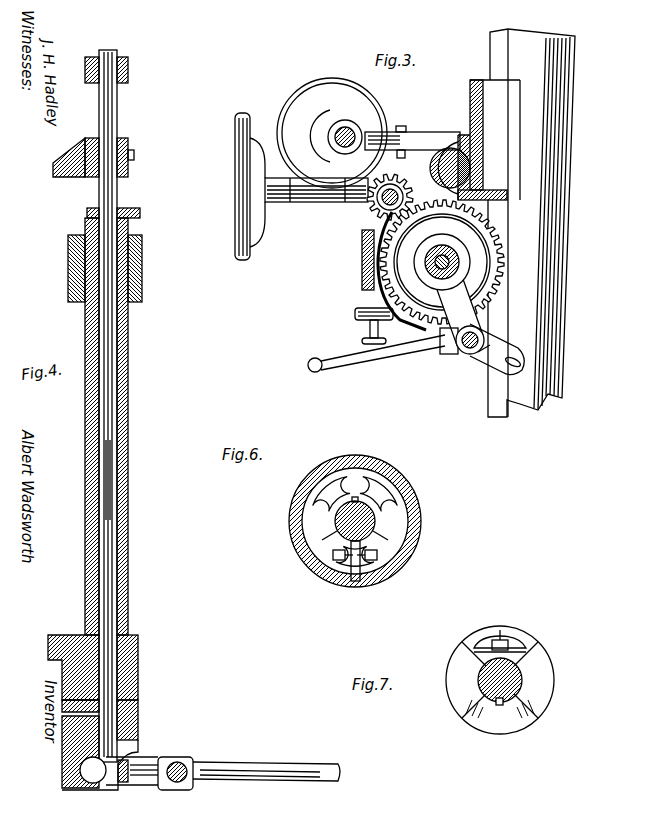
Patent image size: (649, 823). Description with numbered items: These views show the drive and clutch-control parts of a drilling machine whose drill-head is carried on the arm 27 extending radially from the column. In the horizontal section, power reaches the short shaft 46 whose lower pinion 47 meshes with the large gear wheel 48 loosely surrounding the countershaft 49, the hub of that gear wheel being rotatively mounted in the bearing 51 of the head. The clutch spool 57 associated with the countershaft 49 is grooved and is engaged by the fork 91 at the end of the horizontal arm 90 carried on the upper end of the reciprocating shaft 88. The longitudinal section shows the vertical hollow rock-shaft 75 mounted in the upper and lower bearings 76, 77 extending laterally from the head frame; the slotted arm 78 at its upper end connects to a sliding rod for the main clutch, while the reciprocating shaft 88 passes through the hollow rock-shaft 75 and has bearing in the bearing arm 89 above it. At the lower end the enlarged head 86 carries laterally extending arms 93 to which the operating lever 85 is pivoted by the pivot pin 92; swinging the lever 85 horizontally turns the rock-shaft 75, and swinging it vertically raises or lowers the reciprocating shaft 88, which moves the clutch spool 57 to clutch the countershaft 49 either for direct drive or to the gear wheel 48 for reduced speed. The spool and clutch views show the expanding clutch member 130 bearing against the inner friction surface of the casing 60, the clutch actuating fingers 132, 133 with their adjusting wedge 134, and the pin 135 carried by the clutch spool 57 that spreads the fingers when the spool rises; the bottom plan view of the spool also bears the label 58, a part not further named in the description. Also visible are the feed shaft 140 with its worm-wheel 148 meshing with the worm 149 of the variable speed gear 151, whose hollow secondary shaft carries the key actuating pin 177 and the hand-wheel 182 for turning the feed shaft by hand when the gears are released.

In FIG. 3, the arm 27 is at (570, 65).
In FIG. 3, the short shaft 46 is at (378, 201).
In FIG. 3, the pinion 47 is at (385, 206).
In FIG. 3, the gear wheel 48 is at (398, 272).
In FIG. 3, the countershaft 49 is at (455, 256).
In FIG. 6, the countershaft 49 is at (376, 519).
In FIG. 7, the countershaft 49 is at (503, 702).
In FIG. 3, the bearing 51 is at (444, 250).
In FIG. 7, the clutch spool 57 is at (483, 636).
In FIG. 7, the collar 58 is at (536, 666).
In FIG. 6, the casing 60 is at (410, 497).
In FIG. 4, the hollow rock-shaft 75 is at (120, 397).
In FIG. 4, the bearing 76 is at (142, 290).
In FIG. 3, the bearing 76 is at (478, 355).
In FIG. 4, the bearing 77 is at (140, 645).
In FIG. 4, the arm 78 is at (140, 213).
In FIG. 3, the arm 78 is at (500, 366).
In FIG. 4, the operating lever 85 is at (245, 768).
In FIG. 3, the operating lever 85 is at (360, 368).
In FIG. 4, the head 86 is at (140, 712).
In FIG. 4, the reciprocating shaft 88 is at (108, 443).
In FIG. 3, the reciprocating shaft 88 is at (465, 352).
In FIG. 4, the bearing arm 89 is at (128, 70).
In FIG. 4, the arm 90 is at (82, 166).
In FIG. 3, the arm 90 is at (456, 300).
In FIG. 3, the fork 91 is at (466, 270).
In FIG. 4, the pivot pin 92 is at (183, 763).
In FIG. 4, the arms 93 is at (150, 752).
In FIG. 3, the arms 93 is at (440, 344).
In FIG. 6, the expanding clutch member 130 is at (358, 480).
In FIG. 6, the clutch actuating finger 132 is at (340, 562).
In FIG. 6, the clutch actuating finger 133 is at (372, 562).
In FIG. 6, the adjusting wedge 134 is at (355, 582).
In FIG. 7, the pin 135 is at (505, 641).
In FIG. 3, the feed shaft 140 is at (345, 130).
In FIG. 3, the worm-wheel 148 is at (332, 127).
In FIG. 3, the worm 149 is at (403, 126).
In FIG. 3, the variable speed gear 151 is at (362, 268).
In FIG. 3, the key actuating pin 177 is at (368, 342).
In FIG. 3, the hand-wheel 182 is at (355, 316).